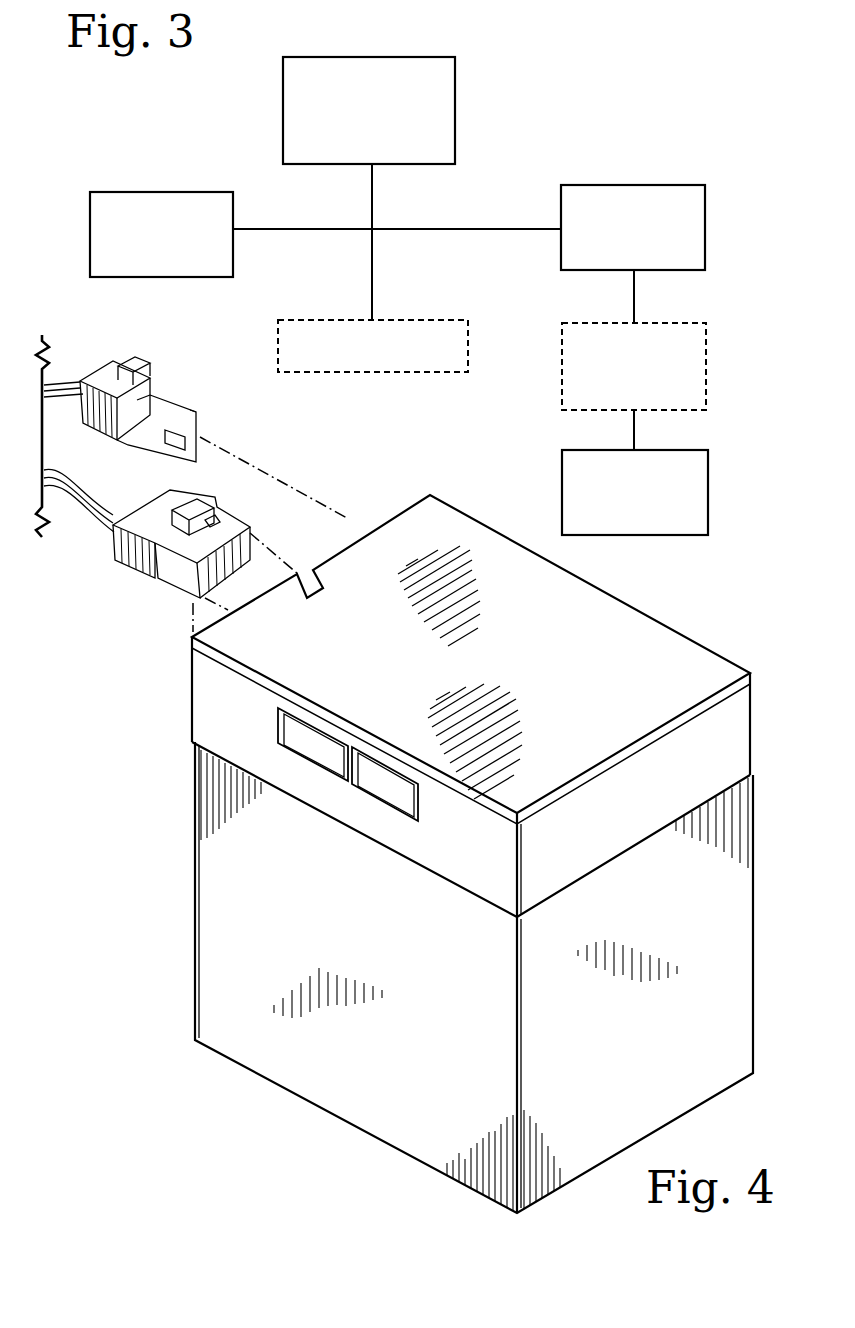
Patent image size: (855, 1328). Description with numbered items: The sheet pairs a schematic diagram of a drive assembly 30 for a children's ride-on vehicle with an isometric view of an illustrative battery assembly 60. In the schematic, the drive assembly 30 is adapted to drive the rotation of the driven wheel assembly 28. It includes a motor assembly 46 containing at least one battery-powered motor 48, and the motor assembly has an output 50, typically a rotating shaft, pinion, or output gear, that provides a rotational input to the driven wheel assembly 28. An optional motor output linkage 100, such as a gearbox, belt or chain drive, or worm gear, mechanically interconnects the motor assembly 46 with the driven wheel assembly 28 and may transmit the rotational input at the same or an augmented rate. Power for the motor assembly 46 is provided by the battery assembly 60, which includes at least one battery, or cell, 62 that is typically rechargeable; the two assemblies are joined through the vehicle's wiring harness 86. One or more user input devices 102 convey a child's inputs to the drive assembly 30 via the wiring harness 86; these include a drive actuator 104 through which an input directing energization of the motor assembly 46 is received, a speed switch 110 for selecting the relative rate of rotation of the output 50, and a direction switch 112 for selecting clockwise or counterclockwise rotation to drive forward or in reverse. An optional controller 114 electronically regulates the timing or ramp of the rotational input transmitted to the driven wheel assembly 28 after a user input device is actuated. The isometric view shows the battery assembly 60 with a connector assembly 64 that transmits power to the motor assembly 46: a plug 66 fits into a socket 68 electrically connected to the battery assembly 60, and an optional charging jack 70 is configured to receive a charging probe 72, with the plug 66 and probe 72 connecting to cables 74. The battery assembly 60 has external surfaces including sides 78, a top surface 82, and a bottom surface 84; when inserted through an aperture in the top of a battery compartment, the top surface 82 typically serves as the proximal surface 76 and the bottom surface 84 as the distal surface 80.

In FIG. 3, the driven wheel assembly 28 is at (660, 450).
In FIG. 3, the drive assembly 30 is at (633, 109).
In FIG. 3, the motor assembly 46 is at (656, 186).
In FIG. 3, the battery-powered motor 48 is at (706, 235).
In FIG. 3, the output 50 is at (634, 310).
In FIG. 3, the battery assembly 60 is at (184, 193).
In FIG. 4, the battery assembly 60 is at (452, 854).
In FIG. 3, the battery 62 is at (118, 192).
In FIG. 4, the battery 62 is at (193, 835).
In FIG. 4, the connector assembly 64 is at (191, 518).
In FIG. 4, the plug 66 is at (141, 586).
In FIG. 4, the socket 68 is at (291, 570).
In FIG. 4, the charging jack 70 is at (286, 579).
In FIG. 4, the charging probe 72 is at (148, 353).
In FIG. 4, the cables 74 is at (52, 397).
In FIG. 4, the proximal surface 76 is at (472, 706).
In FIG. 4, the sides 78 is at (305, 931).
In FIG. 4, the distal surface 80 is at (679, 1071).
In FIG. 4, the top surface 82 is at (698, 662).
In FIG. 4, the bottom surface 84 is at (640, 1110).
In FIG. 3, the wiring harness 86 is at (478, 229).
In FIG. 3, the motor output linkage 100 is at (656, 323).
In FIG. 3, the user input devices 102 is at (424, 58).
In FIG. 3, the drive actuator 104 is at (292, 57).
In FIG. 3, the speed switch 110 is at (343, 57).
In FIG. 3, the direction switch 112 is at (391, 57).
In FIG. 3, the controller 114 is at (418, 320).